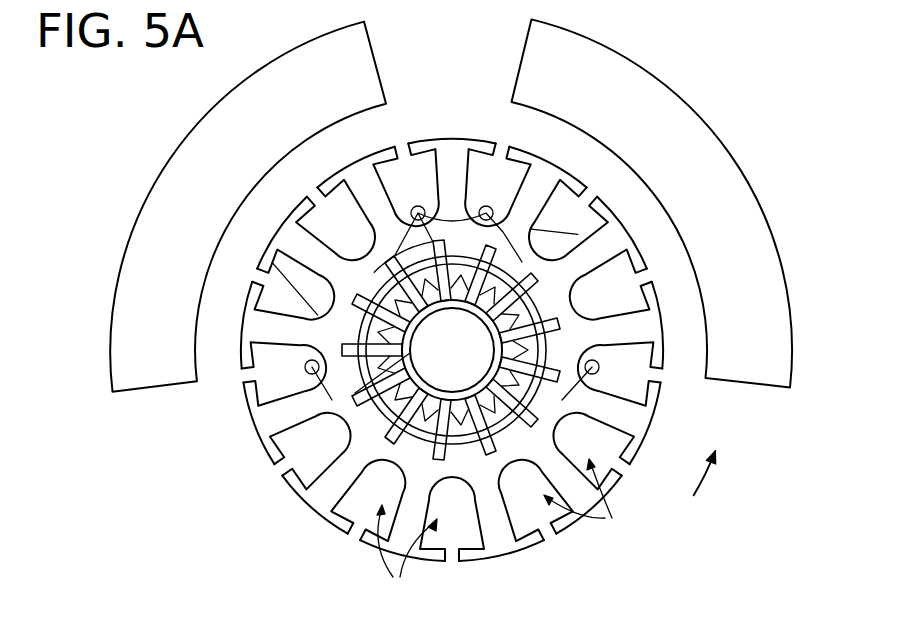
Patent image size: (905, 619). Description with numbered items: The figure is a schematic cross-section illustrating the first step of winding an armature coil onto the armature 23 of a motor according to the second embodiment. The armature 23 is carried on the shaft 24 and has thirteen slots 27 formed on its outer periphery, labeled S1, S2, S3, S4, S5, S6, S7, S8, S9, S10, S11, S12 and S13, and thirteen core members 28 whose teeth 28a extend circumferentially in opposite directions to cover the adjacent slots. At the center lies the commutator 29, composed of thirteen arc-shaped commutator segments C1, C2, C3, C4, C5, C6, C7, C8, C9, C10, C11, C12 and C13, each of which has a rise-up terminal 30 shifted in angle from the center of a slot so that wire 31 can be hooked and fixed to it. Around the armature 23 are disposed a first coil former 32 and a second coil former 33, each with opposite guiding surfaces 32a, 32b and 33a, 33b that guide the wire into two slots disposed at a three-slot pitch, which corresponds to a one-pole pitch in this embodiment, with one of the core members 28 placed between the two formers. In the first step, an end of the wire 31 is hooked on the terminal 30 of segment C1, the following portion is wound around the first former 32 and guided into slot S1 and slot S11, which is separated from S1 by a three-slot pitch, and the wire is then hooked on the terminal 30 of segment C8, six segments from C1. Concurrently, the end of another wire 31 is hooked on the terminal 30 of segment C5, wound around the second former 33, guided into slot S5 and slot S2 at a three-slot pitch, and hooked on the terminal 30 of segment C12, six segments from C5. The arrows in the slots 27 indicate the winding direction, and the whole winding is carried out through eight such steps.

The armature 23 is at (652, 430).
The shaft 24 is at (478, 343).
The slots 27 is at (501, 532).
The core members 28 is at (450, 150).
The teeth 28a is at (417, 140).
The commutator 29 is at (372, 262).
The rise-up terminal 30 is at (345, 351).
The wire 31 is at (318, 308).
The first coil former 32 is at (363, 36).
The guiding surface 32a is at (378, 53).
The guiding surface 32b is at (165, 393).
The second coil former 33 is at (530, 32).
The guiding surface 33a is at (773, 392).
The guiding surface 33b is at (523, 57).
The slot S1 is at (406, 169).
The slot S2 is at (498, 169).
The slot S3 is at (574, 211).
The slot S4 is at (625, 285).
The slot S5 is at (636, 374).
The slot S6 is at (606, 453).
The slot S7 is at (536, 514).
The slot S8 is at (452, 536).
The slot S9 is at (365, 514).
The slot S10 is at (291, 453).
The slot S11 is at (265, 374).
The slot S12 is at (273, 285).
The slot S13 is at (324, 214).
The commutator segment C1 is at (492, 264).
The commutator segment C2 is at (522, 289).
The commutator segment C3 is at (540, 333).
The commutator segment C4 is at (536, 380).
The commutator segment C5 is at (514, 415).
The commutator segment C6 is at (478, 438).
The commutator segment C7 is at (427, 438).
The commutator segment C8 is at (391, 416).
The commutator segment C9 is at (368, 388).
The commutator segment C10 is at (356, 338).
The commutator segment C11 is at (368, 303).
The commutator segment C12 is at (407, 270).
The commutator segment C13 is at (452, 259).